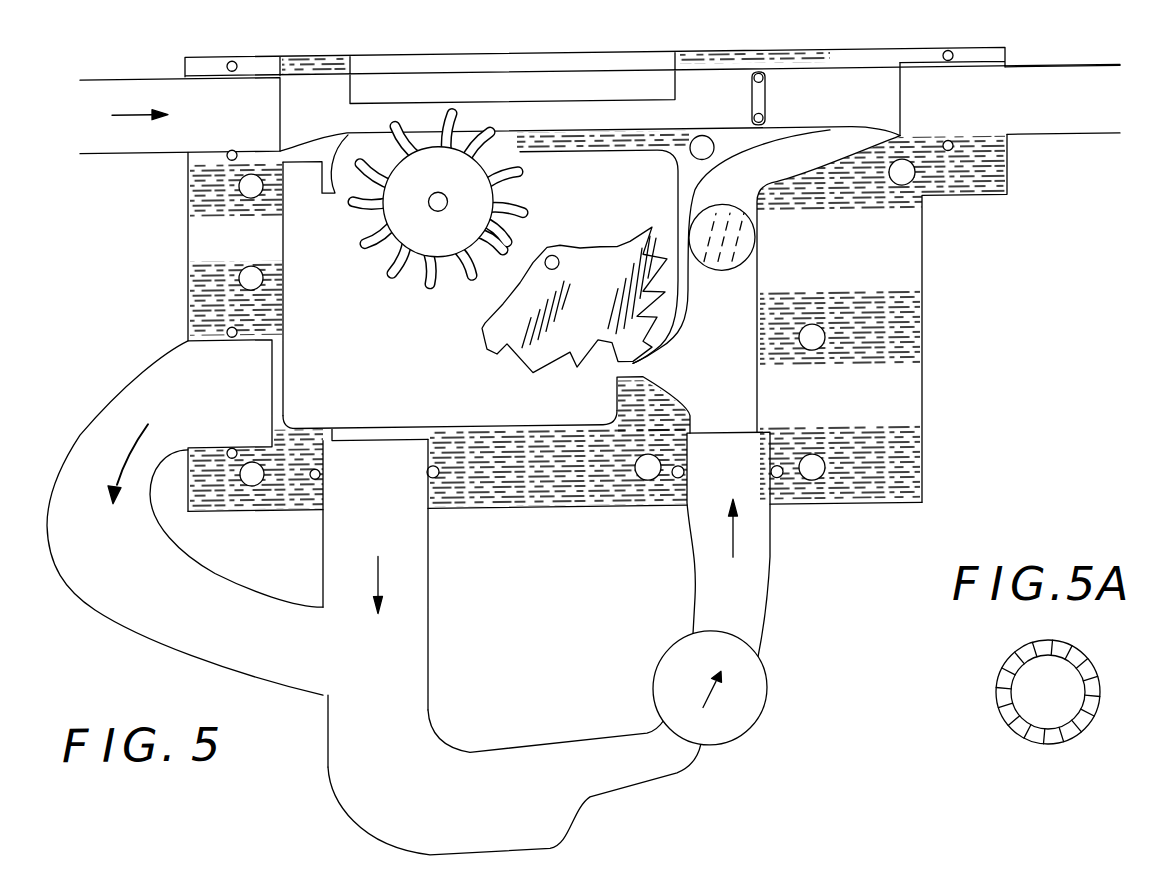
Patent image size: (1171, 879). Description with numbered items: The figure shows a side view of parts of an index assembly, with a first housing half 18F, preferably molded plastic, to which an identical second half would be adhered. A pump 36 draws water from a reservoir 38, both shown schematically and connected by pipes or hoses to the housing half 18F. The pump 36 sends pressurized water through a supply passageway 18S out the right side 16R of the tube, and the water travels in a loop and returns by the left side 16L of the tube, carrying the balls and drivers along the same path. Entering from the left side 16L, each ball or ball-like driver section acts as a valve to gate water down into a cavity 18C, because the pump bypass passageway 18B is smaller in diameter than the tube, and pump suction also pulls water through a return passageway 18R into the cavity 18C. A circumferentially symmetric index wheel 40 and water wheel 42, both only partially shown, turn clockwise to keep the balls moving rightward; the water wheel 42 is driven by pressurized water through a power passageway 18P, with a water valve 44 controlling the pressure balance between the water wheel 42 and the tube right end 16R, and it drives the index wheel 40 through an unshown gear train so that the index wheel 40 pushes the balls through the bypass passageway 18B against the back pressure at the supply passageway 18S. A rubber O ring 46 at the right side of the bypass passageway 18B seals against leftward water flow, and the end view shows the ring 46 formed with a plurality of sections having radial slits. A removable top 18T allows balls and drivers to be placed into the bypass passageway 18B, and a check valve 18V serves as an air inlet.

In FIG. 5, the left side of tube 16L is at (150, 148).
In FIG. 5, the right side of tube 16R is at (1050, 140).
In FIG. 5, the pump bypass passageway 18B is at (295, 78).
In FIG. 5, the removable top 18T is at (400, 61).
In FIG. 5, the return passageway 18R is at (520, 151).
In FIG. 5, the check valve 18V is at (310, 285).
In FIG. 5, the cavity 18C is at (493, 430).
In FIG. 5, the power passageway 18P is at (643, 379).
In FIG. 5, the supply passageway 18S is at (760, 404).
In FIG. 5, the first housing half 18F is at (842, 508).
In FIG. 5, the index wheel 40 is at (475, 122).
In FIG. 5, the water wheel 42 is at (516, 372).
In FIG. 5, the water valve 44 is at (745, 261).
In FIG. 5, the O ring 46 is at (752, 64).
In FIG. 5A, the O ring 46 is at (997, 690).
In FIG. 5, the pump 36 is at (737, 711).
In FIG. 5, the reservoir 38 is at (543, 829).